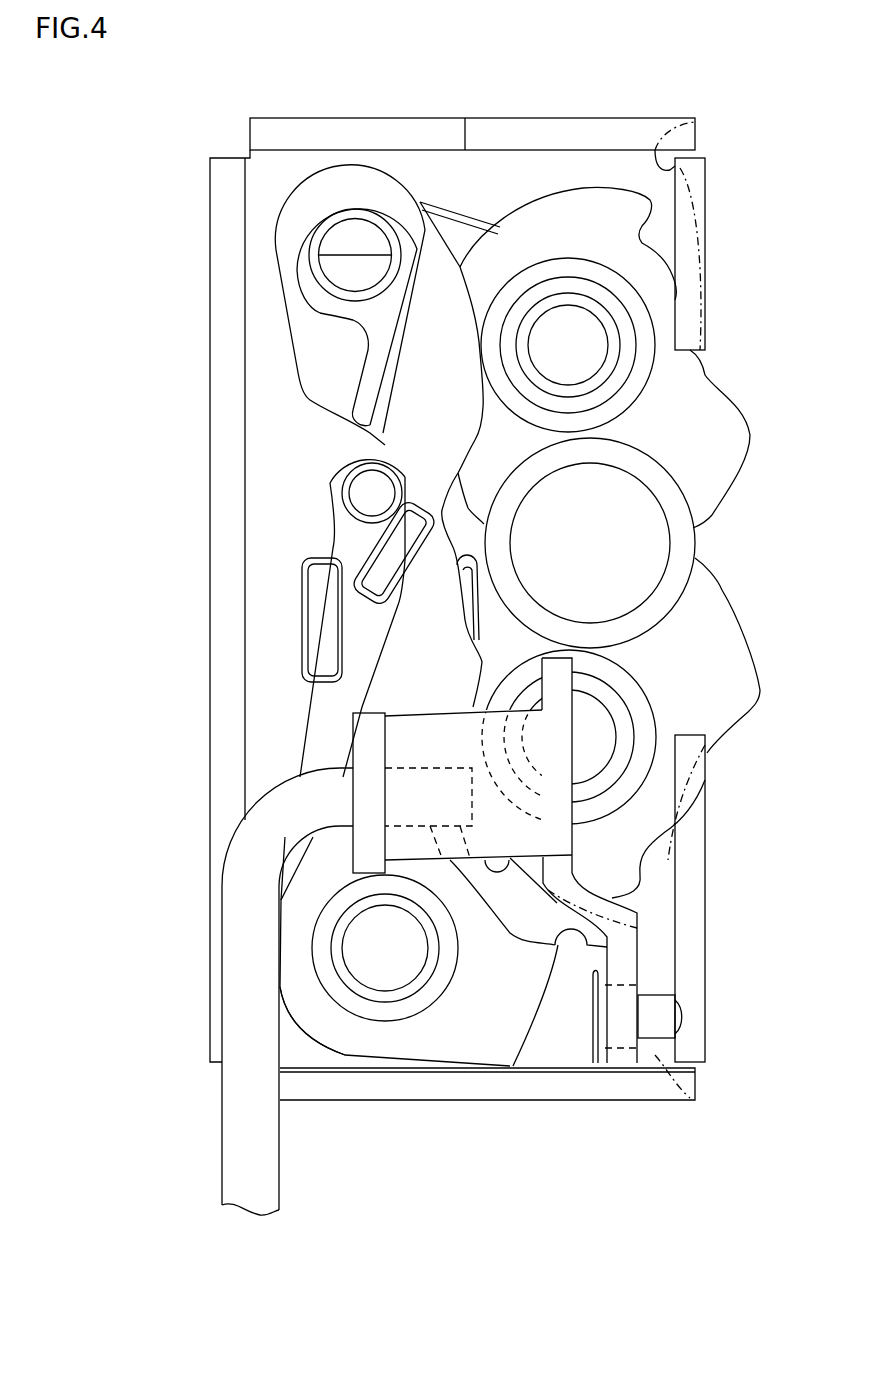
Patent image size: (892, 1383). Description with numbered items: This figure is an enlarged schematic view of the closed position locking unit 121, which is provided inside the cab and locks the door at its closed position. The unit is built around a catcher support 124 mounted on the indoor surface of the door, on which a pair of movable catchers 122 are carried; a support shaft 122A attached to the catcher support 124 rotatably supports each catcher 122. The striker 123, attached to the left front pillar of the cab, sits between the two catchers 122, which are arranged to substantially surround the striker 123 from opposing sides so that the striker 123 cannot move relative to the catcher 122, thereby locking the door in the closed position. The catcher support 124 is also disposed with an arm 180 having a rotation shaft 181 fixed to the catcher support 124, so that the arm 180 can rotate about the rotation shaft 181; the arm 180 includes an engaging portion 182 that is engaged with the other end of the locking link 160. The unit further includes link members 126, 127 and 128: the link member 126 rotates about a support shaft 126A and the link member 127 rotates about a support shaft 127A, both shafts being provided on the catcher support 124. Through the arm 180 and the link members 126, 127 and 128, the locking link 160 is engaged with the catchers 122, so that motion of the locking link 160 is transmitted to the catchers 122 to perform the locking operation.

The closed position locking unit 121 is at (708, 98).
The movable catcher 122 is at (715, 416).
The support shaft 122A is at (645, 330).
The striker 123 is at (640, 545).
The catcher support 124 is at (265, 302).
The link member 126 is at (470, 1020).
The support shaft 126A is at (385, 1005).
The link member 127 is at (330, 358).
The support shaft 127A is at (340, 245).
The link member 128 is at (355, 640).
The locking link 160 is at (263, 1174).
The arm 180 is at (615, 917).
The rotation shaft 181 is at (655, 1020).
The engaging portion 182 is at (420, 745).